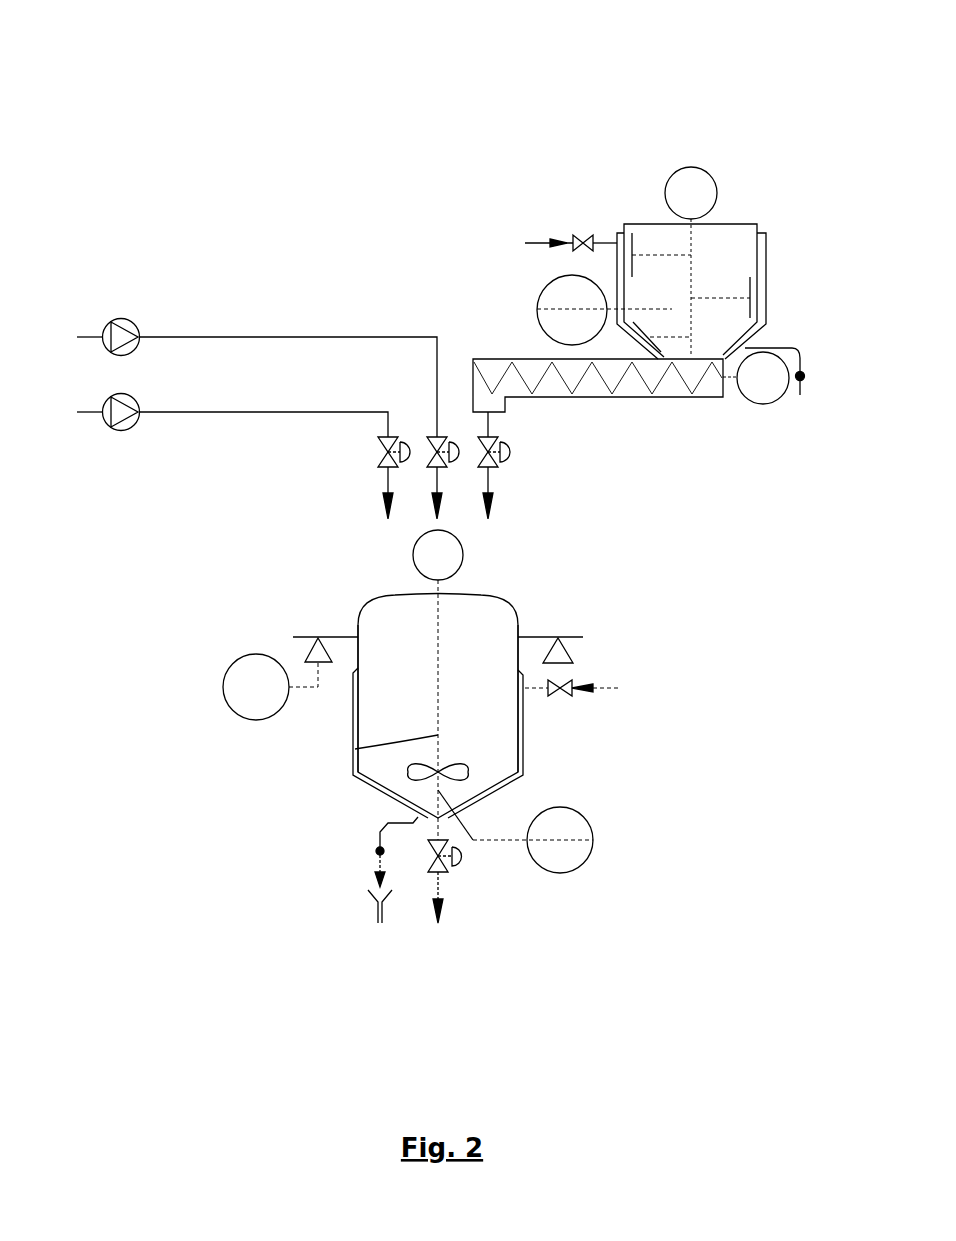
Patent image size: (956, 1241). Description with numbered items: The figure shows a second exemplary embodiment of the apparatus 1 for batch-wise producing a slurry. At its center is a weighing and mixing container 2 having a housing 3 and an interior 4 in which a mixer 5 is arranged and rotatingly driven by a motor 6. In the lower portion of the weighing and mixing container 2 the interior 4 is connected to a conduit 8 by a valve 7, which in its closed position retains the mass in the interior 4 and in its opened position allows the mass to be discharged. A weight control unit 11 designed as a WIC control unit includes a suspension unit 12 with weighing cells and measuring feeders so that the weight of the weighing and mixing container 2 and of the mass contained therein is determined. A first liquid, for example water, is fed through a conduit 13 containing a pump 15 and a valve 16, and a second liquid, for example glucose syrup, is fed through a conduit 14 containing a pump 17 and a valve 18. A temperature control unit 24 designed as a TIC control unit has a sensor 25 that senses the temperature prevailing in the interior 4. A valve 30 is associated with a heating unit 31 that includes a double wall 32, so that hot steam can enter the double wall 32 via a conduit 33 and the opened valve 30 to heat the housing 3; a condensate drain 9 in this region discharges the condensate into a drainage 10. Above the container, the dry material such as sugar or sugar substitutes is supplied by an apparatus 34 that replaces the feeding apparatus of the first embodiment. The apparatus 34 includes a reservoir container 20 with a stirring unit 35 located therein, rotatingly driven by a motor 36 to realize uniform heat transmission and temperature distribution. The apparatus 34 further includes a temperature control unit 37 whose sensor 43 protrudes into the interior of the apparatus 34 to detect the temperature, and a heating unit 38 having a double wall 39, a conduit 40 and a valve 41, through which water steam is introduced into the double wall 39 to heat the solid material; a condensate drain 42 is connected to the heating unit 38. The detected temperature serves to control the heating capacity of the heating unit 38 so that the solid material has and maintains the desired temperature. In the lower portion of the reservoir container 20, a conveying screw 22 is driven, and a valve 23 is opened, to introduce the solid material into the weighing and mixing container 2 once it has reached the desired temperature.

The apparatus 1 is at (345, 101).
The weighing and mixing container 2 is at (487, 578).
The housing 3 is at (360, 618).
The interior 4 is at (390, 638).
The mixer 5 is at (355, 749).
The motor 6 is at (414, 556).
The valve 7 is at (430, 863).
The conduit 8 is at (430, 883).
The condensate drain 9 is at (376, 851).
The drainage 10 is at (372, 910).
The weight control unit 11 is at (240, 700).
The suspension unit 12 is at (305, 650).
The conduit 13 is at (167, 412).
The conduit 14 is at (92, 338).
The pump 15 is at (107, 416).
The valve 16 is at (382, 460).
The pump 17 is at (110, 334).
The valve 18 is at (478, 440).
The reservoir container 20 is at (740, 245).
The conveying screw 22 is at (543, 373).
The valve 23 is at (462, 428).
The temperature control unit 24 is at (560, 865).
The sensor 25 is at (413, 807).
The valve 30 is at (568, 692).
The heating unit 31 is at (353, 714).
The double wall 32 is at (353, 774).
The conduit 33 is at (607, 688).
The apparatus 34 is at (640, 193).
The stirring unit 35 is at (692, 243).
The motor 36 is at (691, 177).
The temperature control unit 37 is at (548, 300).
The heating unit 38 is at (767, 253).
The double wall 39 is at (766, 277).
The conduit 40 is at (606, 240).
The valve 41 is at (573, 240).
The condensate drain 42 is at (803, 372).
The sensor 43 is at (652, 309).